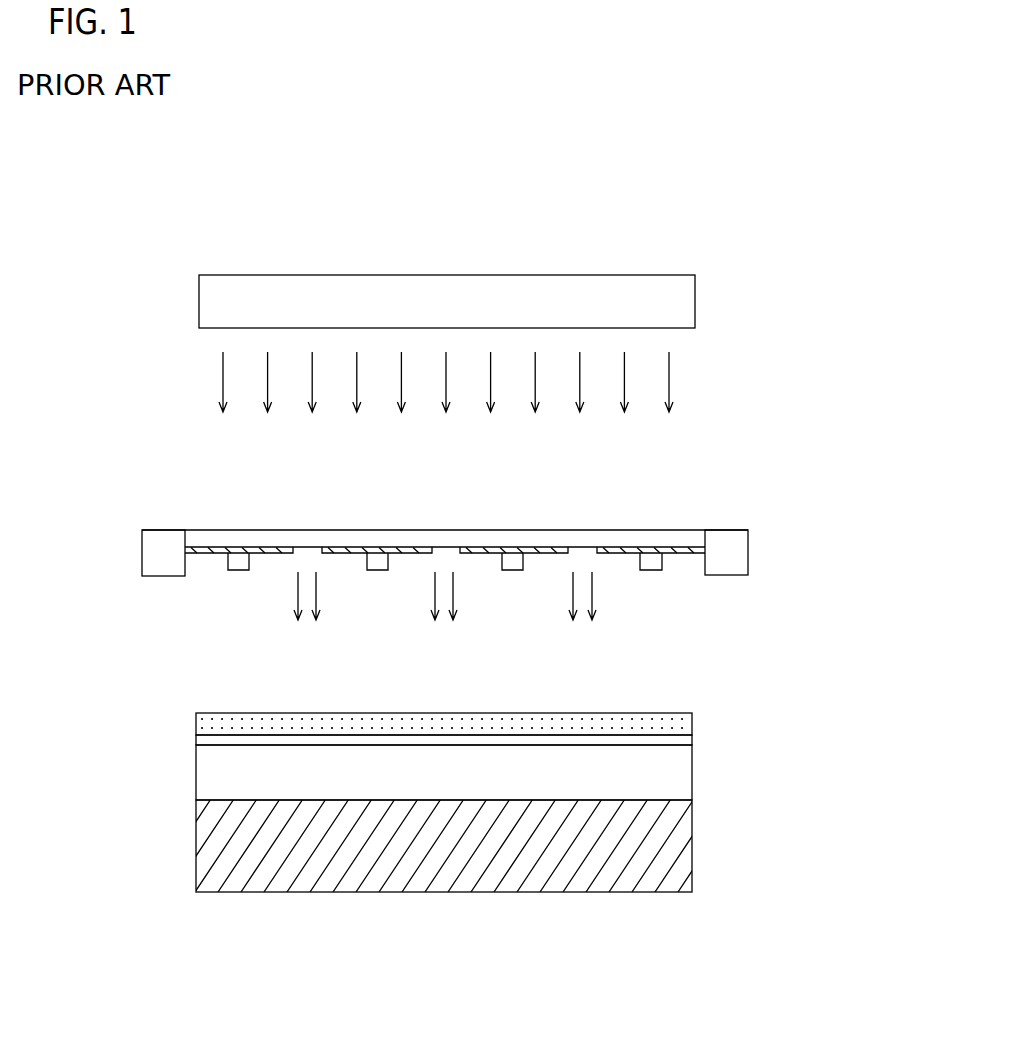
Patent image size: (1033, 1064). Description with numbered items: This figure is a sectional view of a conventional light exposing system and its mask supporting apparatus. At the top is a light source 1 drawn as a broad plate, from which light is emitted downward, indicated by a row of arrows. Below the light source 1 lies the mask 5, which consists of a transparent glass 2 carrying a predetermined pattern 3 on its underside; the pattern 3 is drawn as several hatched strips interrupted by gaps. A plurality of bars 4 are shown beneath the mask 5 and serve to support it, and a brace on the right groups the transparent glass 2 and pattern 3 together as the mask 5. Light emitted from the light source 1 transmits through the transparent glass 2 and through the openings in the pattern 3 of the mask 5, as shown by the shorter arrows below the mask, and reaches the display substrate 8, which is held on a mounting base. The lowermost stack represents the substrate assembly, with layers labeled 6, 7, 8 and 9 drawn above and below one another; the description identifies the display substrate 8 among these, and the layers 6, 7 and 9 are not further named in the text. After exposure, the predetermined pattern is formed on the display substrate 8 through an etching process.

The light source 1 is at (695, 300).
The transparent glass 2 is at (675, 528).
The pattern 3 is at (683, 553).
The bars 4 is at (650, 571).
The mask 5 is at (840, 502).
The photoresist layer 6 is at (693, 720).
The thin film layer 7 is at (693, 740).
The display substrate 8 is at (686, 777).
The substrate 9 is at (686, 853).